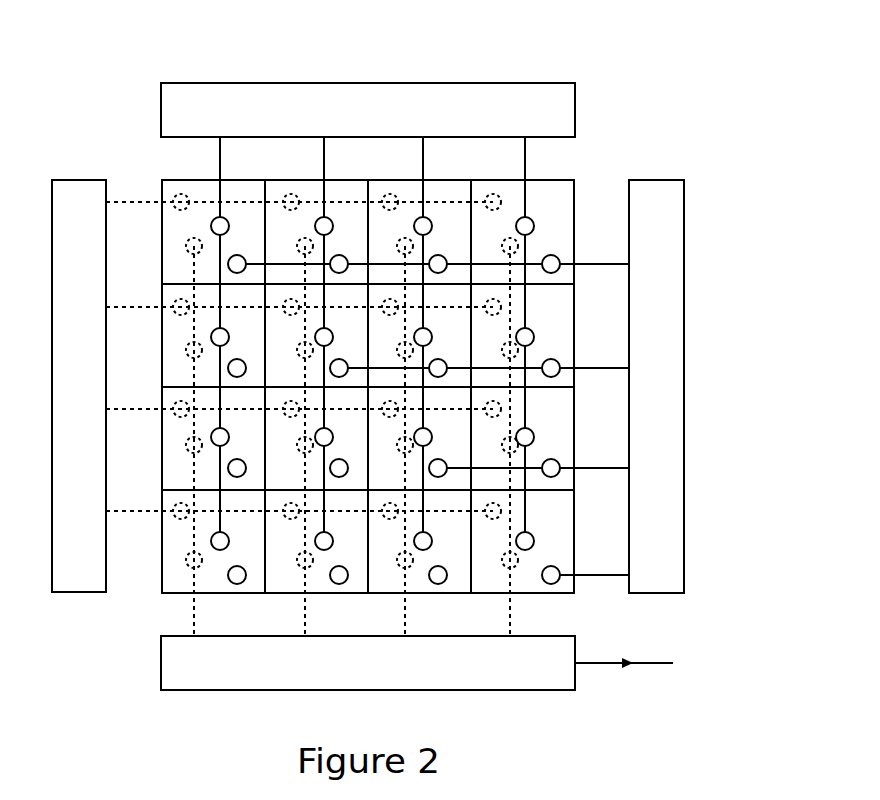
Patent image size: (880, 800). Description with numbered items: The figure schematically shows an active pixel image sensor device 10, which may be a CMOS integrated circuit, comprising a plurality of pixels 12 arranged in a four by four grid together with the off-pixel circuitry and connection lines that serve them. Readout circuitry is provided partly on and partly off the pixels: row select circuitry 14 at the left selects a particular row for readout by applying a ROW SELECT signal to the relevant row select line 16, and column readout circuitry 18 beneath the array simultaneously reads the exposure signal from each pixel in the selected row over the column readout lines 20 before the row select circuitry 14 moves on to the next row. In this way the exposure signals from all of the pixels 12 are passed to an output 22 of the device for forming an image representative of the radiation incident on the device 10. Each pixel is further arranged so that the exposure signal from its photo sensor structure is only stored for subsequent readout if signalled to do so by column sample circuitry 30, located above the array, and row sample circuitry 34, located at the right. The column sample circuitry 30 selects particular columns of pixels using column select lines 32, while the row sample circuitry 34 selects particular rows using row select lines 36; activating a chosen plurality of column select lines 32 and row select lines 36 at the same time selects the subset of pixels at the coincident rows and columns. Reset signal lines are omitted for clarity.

The active pixel image sensor device 10 is at (666, 71).
The pixels 12 is at (567, 195).
The row select circuitry 14 is at (77, 593).
The row select line 16 is at (137, 202).
The column readout circuitry 18 is at (230, 692).
The column readout lines 20 is at (512, 607).
The output 22 is at (760, 678).
The column sample circuitry 30 is at (188, 82).
The column select lines 32 is at (422, 153).
The row sample circuitry 34 is at (687, 192).
The row select lines 36 is at (610, 370).